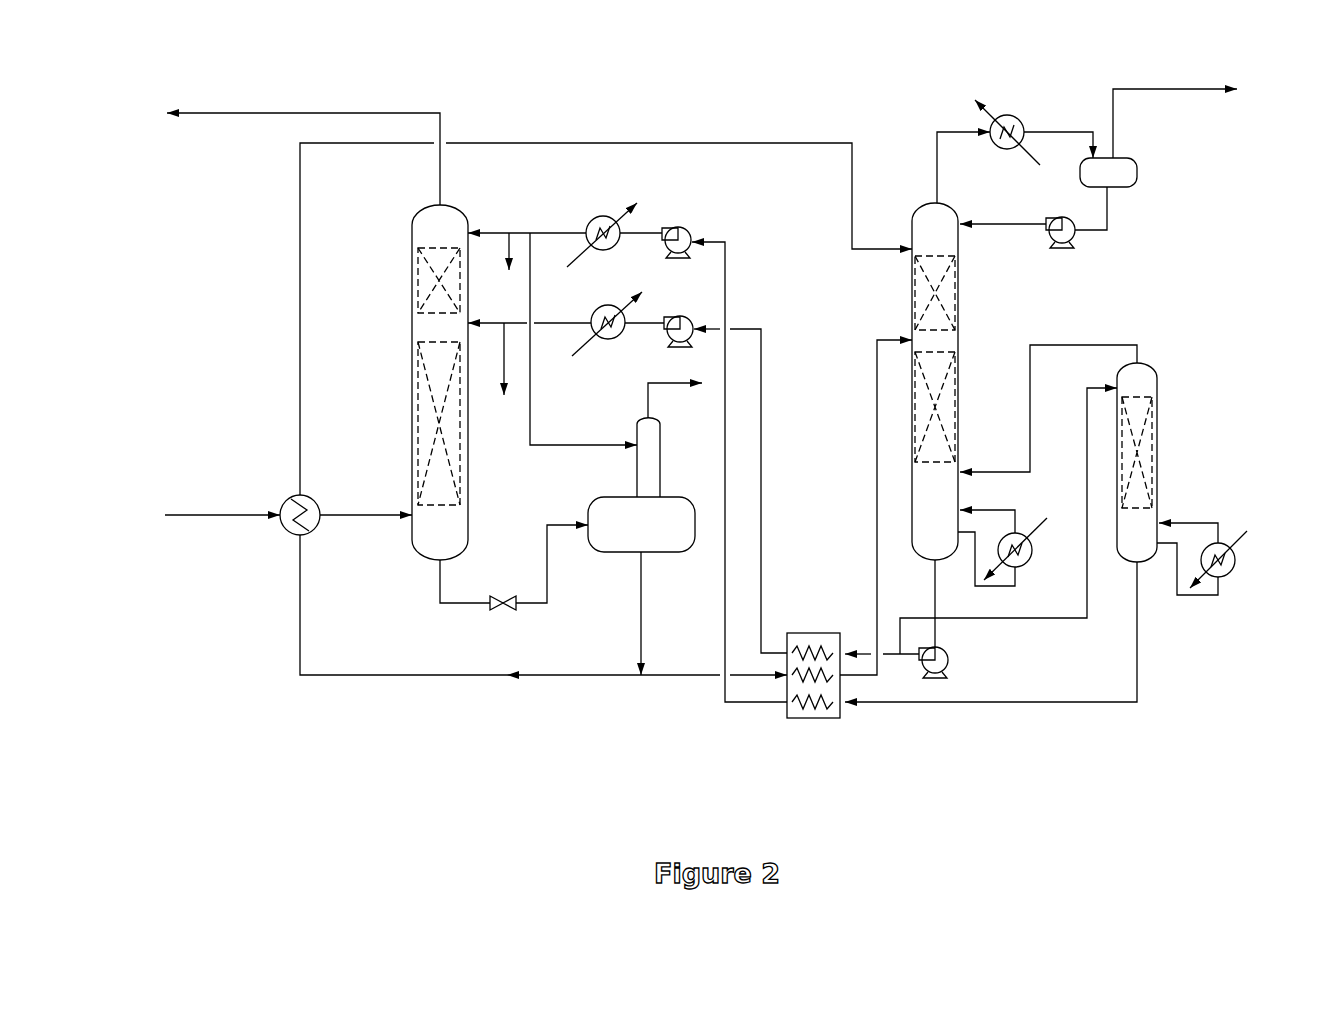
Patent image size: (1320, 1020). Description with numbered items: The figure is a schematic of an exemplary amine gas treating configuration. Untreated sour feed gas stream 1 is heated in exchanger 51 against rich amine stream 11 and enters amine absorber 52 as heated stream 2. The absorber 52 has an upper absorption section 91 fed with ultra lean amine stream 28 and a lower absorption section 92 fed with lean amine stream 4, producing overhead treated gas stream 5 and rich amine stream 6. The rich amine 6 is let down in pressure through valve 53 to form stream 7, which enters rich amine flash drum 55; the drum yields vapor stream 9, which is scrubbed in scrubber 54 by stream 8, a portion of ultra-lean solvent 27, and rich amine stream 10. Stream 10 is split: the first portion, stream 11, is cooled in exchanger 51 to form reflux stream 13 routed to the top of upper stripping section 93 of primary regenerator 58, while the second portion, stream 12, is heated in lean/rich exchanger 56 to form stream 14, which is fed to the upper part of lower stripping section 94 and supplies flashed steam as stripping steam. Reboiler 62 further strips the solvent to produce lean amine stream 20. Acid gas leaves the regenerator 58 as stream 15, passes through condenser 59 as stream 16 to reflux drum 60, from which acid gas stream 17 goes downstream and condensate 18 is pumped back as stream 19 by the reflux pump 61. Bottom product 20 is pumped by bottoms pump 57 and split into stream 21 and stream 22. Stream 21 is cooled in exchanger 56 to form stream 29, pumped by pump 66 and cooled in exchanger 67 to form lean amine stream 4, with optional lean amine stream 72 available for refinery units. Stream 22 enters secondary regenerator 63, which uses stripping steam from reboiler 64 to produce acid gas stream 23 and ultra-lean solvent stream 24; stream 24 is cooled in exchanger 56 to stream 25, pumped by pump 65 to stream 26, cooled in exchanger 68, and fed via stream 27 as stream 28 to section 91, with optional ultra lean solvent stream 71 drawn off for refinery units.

The untreated sour feed gas stream 1 is at (232, 513).
The heated stream 2 is at (377, 520).
The lean amine stream 4 is at (492, 320).
The overhead treated gas stream 5 is at (250, 112).
The rich amine stream 6 is at (435, 600).
The stream 7 is at (547, 520).
The stream 8 is at (597, 442).
The vapor stream 9 is at (652, 382).
The rich amine stream 10 is at (637, 620).
The rich amine stream 11 is at (478, 673).
The stream 12 is at (700, 673).
The reflux stream 13 is at (300, 225).
The stream 14 is at (877, 520).
The acid gas stream 15 is at (937, 128).
The stream 16 is at (1088, 130).
The acid gas stream 17 is at (1180, 88).
The condensate 18 is at (1098, 228).
The stream 19 is at (1015, 222).
The lean amine stream 20 is at (940, 598).
The stream 21 is at (864, 648).
The stream 22 is at (1063, 618).
The acid gas stream 23 is at (1075, 343).
The ultra-lean solvent stream 24 is at (1080, 700).
The stream 25 is at (728, 308).
The stream 26 is at (648, 232).
The ultra-lean solvent stream 27 is at (550, 231).
The ultra lean amine stream 28 is at (487, 230).
The stream 29 is at (763, 488).
The exchanger 51 is at (286, 495).
The amine absorber 52 is at (410, 228).
The valve 53 is at (500, 596).
The scrubber 54 is at (663, 452).
The rich amine flash drum 55 is at (665, 497).
The lean/rich exchanger 56 is at (818, 632).
The bottoms pump 57 is at (948, 656).
The primary regenerator 58 is at (912, 215).
The condenser 59 is at (1010, 120).
The reflux drum 60 is at (1140, 168).
The reflux pump 61 is at (1078, 255).
The reboiler 62 is at (1033, 550).
The secondary regenerator 63 is at (1158, 385).
The reboiler 64 is at (1237, 560).
The pump 65 is at (704, 222).
The pump 66 is at (684, 316).
The exchanger 67 is at (607, 305).
The exchanger 68 is at (612, 212).
The ultra lean solvent stream 71 is at (506, 277).
The lean amine stream 72 is at (507, 392).
The upper absorption section 91 is at (410, 290).
The lower absorption section 92 is at (412, 420).
The upper stripping section 93 is at (962, 318).
The lower stripping section 94 is at (962, 425).